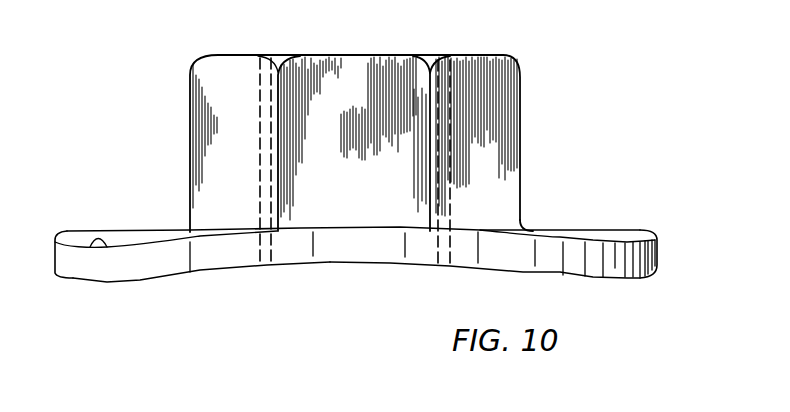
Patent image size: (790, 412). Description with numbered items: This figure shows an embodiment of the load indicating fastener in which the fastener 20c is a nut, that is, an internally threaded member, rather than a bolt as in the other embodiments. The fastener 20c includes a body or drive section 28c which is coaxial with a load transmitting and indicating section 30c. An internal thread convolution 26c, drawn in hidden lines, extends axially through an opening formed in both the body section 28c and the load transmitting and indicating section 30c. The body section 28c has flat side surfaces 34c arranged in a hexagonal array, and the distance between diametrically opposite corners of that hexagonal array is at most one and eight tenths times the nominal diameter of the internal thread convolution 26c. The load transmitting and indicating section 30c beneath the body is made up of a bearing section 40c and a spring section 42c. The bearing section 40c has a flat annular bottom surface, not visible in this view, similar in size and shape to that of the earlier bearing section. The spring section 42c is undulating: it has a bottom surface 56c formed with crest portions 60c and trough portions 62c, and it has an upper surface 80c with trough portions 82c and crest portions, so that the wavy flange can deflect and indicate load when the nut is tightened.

The fastener 20c is at (703, 50).
The internal thread convolution 26c is at (262, 126).
The body or drive section 28c is at (190, 100).
The load transmitting and indicating section 30c is at (82, 223).
The flat side surfaces 34c is at (237, 90).
The bearing section 40c is at (543, 213).
The spring section 42c is at (615, 228).
The bottom surface 56c is at (226, 271).
The crest portions 60c is at (372, 264).
The trough portions 62c is at (122, 284).
The upper surface 80c is at (160, 238).
The trough portions 82c is at (90, 247).